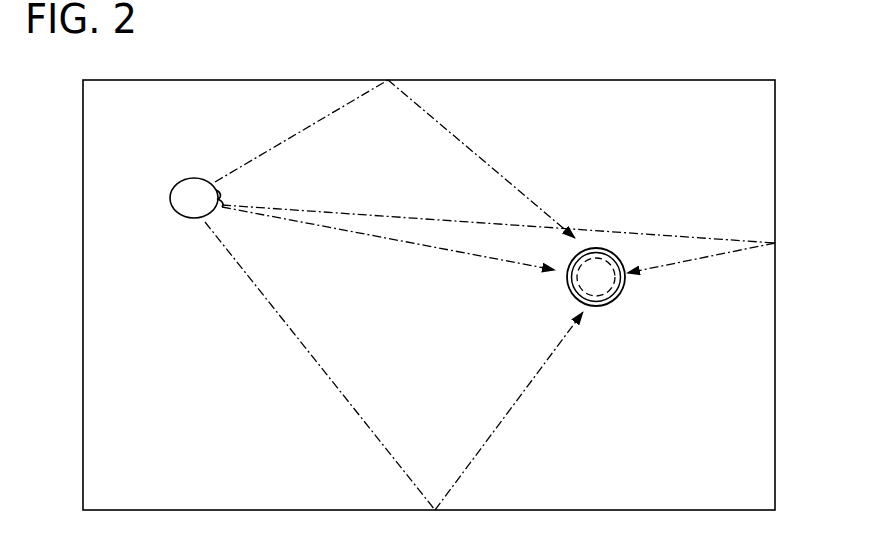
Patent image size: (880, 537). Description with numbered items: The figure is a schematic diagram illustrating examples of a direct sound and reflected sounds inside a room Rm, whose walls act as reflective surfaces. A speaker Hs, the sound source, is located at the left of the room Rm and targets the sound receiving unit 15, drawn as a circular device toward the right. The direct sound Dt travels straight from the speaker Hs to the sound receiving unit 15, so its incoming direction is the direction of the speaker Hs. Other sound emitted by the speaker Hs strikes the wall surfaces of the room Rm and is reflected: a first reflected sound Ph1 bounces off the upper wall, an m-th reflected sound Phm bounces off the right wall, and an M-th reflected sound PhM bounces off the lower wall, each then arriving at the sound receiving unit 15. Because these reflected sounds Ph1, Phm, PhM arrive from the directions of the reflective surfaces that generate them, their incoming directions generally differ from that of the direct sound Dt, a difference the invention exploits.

The room Rm is at (689, 80).
The speaker Hs is at (196, 178).
The sound receiving unit 15 is at (618, 300).
The reflected sound Ph1 is at (395, 159).
The direct sound Dt is at (388, 242).
The reflected sound Phm is at (498, 252).
The reflected sound PhM is at (394, 366).